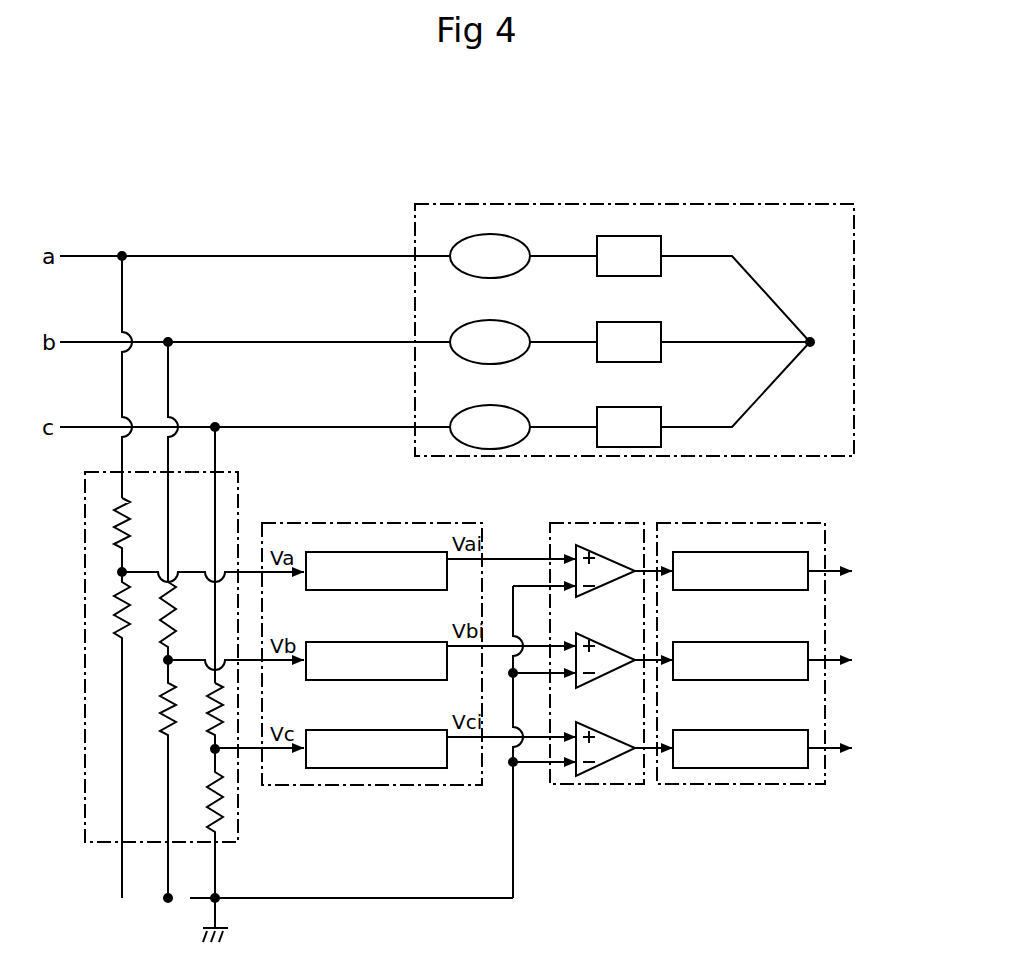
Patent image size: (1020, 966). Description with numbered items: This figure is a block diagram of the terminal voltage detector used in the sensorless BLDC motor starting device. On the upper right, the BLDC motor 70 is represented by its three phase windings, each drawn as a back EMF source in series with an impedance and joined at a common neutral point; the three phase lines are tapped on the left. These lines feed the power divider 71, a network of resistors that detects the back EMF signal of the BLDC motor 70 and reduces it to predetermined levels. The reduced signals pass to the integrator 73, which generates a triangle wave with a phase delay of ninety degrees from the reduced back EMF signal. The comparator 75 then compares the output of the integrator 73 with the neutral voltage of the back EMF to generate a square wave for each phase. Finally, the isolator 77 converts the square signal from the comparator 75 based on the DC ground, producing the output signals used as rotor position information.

The BLDC motor 70 is at (856, 384).
The power divider 71 is at (83, 660).
The integrator 73 is at (393, 523).
The comparator 75 is at (608, 523).
The isolator 77 is at (785, 523).